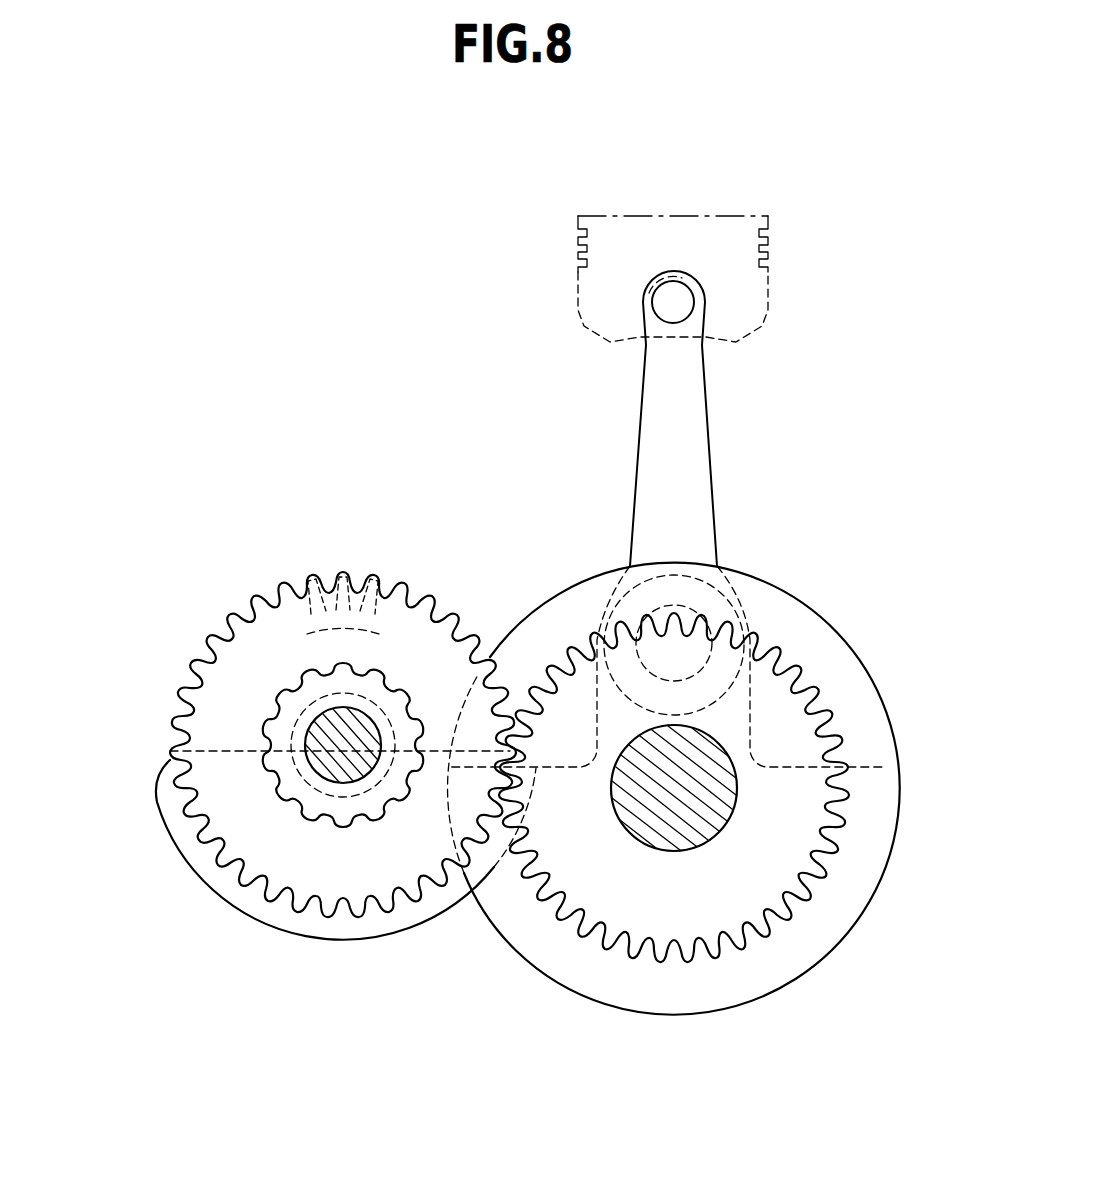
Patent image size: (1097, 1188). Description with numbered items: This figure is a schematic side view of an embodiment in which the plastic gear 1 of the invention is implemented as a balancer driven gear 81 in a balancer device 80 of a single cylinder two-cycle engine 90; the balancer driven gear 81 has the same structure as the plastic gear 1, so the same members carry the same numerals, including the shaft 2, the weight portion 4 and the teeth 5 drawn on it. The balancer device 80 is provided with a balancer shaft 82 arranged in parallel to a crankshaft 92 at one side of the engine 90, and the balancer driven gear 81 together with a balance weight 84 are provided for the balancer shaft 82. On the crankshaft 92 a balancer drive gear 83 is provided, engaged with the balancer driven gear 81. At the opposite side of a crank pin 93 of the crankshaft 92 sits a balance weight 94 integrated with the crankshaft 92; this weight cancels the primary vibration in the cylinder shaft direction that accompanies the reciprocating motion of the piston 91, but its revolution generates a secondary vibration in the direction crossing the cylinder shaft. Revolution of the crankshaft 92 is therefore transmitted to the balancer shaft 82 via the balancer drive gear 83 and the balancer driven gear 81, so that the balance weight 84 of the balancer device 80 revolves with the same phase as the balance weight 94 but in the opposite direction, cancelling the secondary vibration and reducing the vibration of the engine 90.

The plastic gear 1 is at (290, 744).
The balancer shaft 2 is at (288, 780).
The weight portion 4 is at (388, 590).
The teeth 5 is at (377, 592).
The balancer device 80 is at (298, 505).
The balancer driven gear 81 is at (182, 688).
The balancer shaft 82 is at (313, 722).
The balancer drive gear 83 is at (832, 727).
The balance weight 84 is at (267, 928).
The engine 90 is at (843, 463).
The piston 91 is at (770, 290).
The crankshaft 92 is at (705, 755).
The crank pin 93 is at (720, 607).
The balance weight 94 is at (895, 780).